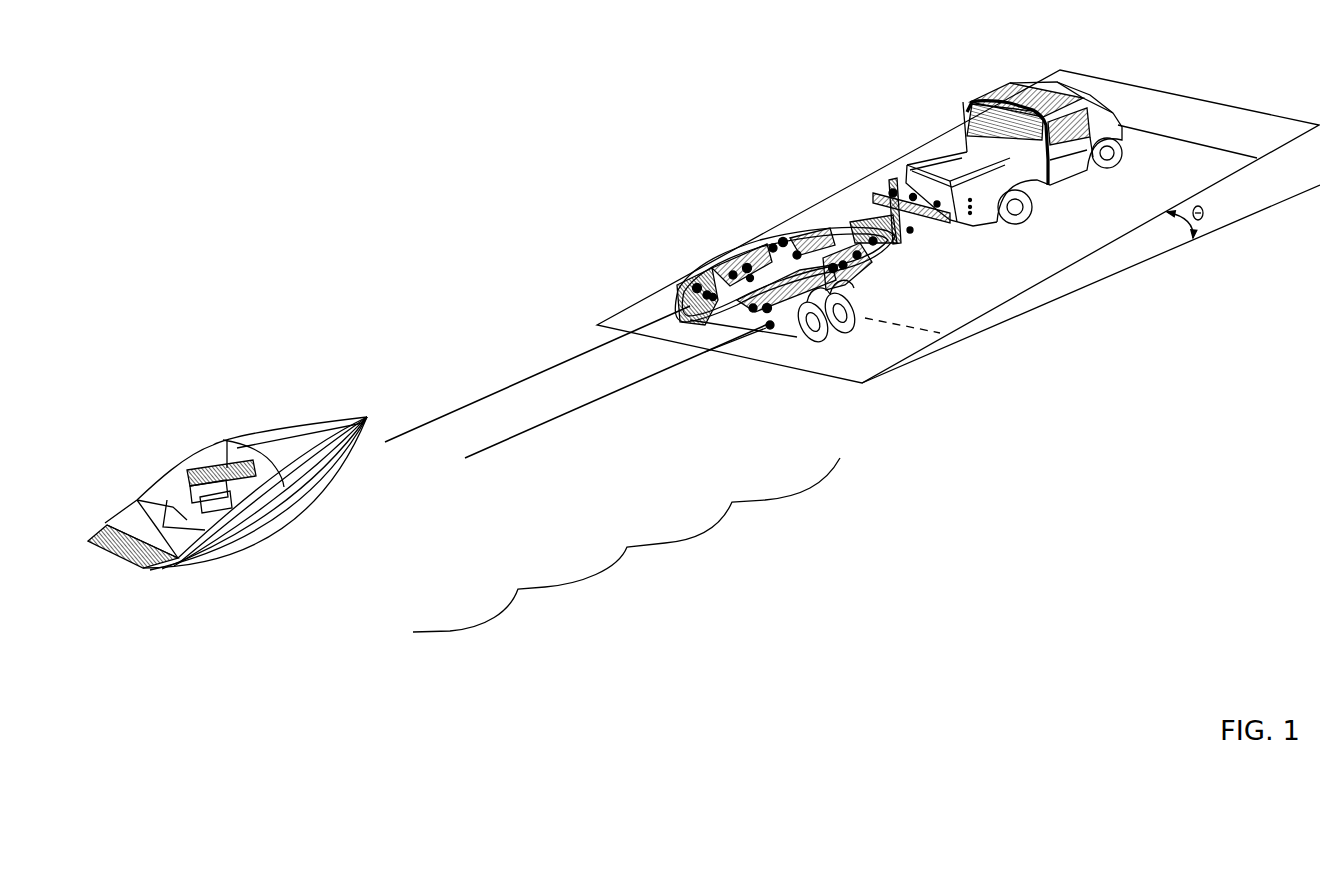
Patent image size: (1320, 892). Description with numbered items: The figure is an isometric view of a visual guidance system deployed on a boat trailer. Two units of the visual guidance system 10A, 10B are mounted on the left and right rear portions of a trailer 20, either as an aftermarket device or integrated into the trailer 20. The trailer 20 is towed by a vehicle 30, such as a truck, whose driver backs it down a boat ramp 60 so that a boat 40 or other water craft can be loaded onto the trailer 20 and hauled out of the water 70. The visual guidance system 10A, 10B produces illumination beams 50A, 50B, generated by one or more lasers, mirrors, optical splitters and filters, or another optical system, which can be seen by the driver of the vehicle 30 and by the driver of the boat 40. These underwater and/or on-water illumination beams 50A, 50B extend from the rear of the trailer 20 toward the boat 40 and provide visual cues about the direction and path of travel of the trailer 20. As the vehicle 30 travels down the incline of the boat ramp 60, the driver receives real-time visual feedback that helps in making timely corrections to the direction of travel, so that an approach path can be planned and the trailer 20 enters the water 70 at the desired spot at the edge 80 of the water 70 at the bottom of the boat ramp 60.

The visual guidance system unit 10A is at (683, 307).
The visual guidance system unit 10B is at (767, 328).
The trailer 20 is at (865, 293).
The vehicle 30 is at (1000, 88).
The boat 40 is at (263, 538).
The illumination beam 50A is at (511, 386).
The illumination beam 50B is at (550, 423).
The boat ramp 60 is at (985, 274).
The water 70 is at (694, 548).
The edge of the water 80 is at (918, 333).